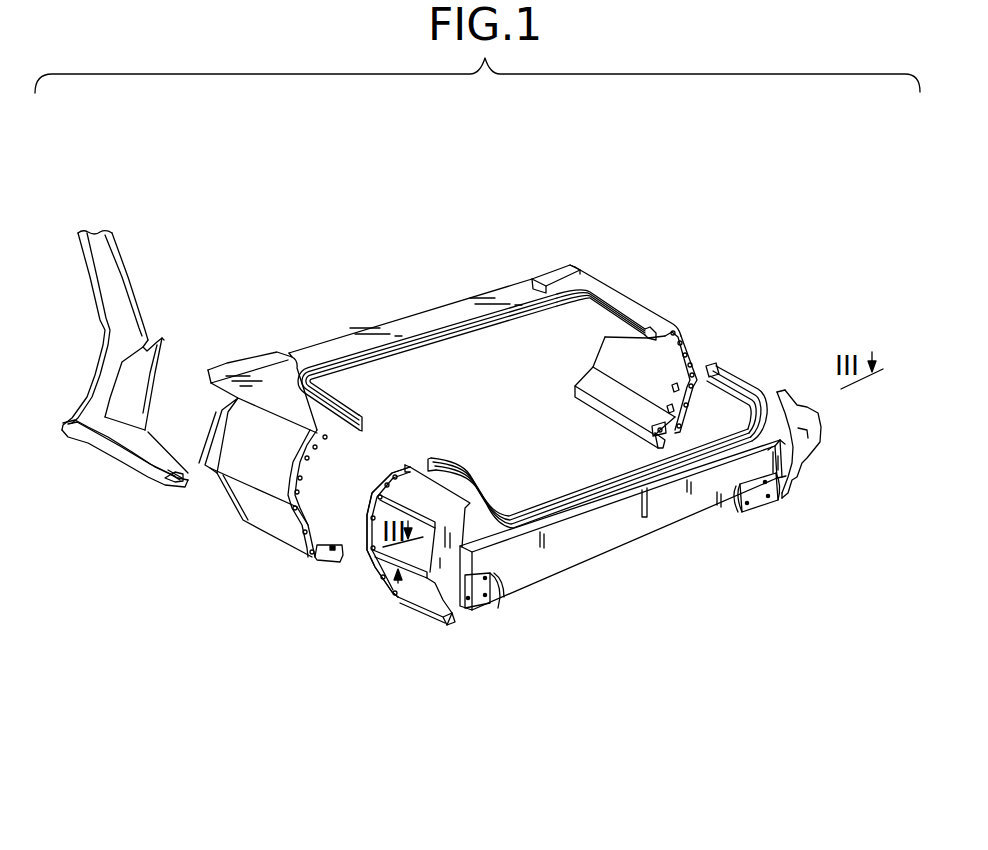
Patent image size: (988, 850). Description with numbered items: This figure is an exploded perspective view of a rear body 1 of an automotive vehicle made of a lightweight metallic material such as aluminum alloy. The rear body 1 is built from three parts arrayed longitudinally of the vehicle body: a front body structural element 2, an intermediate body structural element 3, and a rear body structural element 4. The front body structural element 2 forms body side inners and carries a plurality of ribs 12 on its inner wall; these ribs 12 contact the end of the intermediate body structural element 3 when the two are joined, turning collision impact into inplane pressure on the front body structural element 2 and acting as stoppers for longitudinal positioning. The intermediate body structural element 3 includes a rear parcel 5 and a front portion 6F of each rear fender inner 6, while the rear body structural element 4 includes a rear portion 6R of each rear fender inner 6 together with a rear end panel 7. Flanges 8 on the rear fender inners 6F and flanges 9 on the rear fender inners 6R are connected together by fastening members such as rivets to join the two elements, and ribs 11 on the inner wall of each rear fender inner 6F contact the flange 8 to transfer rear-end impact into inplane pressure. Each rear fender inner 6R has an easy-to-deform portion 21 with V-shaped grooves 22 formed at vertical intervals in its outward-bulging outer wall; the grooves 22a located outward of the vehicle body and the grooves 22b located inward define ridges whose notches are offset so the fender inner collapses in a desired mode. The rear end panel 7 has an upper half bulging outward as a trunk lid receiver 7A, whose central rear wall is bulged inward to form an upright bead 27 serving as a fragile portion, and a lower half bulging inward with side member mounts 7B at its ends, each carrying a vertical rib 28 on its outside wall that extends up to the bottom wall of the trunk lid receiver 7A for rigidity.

The rear body 1 is at (465, 213).
The front body structural element 2 is at (127, 264).
The intermediate body structural element 3 is at (612, 279).
The rear body structural element 4 is at (763, 365).
The rear parcel 5 is at (373, 330).
The rear fender inner 6 is at (468, 492).
The front portion of rear fender inner 6F is at (233, 470).
The rear portion of rear fender inner 6R is at (740, 363).
The rear end panel 7 is at (621, 549).
The trunk lid receiver 7A is at (603, 527).
The side member mount 7B is at (477, 600).
The flange 8 is at (300, 520).
The flange 9 is at (380, 490).
The rib 11 is at (672, 388).
The rib 12 is at (172, 476).
The easy-to-deform portion 21 is at (807, 477).
The V-shaped groove 22 is at (569, 492).
The groove located outward of the vehicle body 22a is at (367, 517).
The groove located inward of the vehicle body 22b is at (418, 465).
The upright bead 27 is at (645, 518).
The vertical rib 28 is at (500, 582).